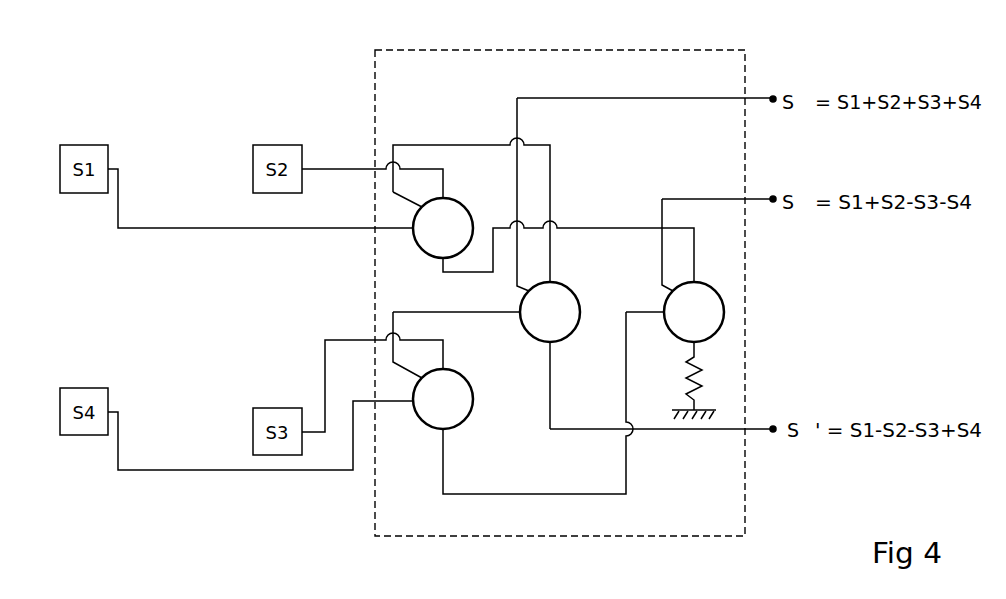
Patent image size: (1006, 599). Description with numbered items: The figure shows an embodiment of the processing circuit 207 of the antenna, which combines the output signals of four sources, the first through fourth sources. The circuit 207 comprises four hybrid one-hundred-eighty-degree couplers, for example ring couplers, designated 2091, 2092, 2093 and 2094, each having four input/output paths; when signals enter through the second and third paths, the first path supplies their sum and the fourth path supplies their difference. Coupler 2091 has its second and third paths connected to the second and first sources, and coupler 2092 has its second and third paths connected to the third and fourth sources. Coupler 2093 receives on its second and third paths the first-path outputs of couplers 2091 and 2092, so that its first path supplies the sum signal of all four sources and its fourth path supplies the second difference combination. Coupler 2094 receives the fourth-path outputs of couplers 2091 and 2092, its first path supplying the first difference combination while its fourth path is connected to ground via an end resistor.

The processing circuit 207 is at (582, 50).
The hybrid 180-degree coupler 2091 is at (471, 218).
The hybrid 180-degree coupler 2092 is at (473, 405).
The hybrid 180-degree coupler 2093 is at (537, 341).
The hybrid 180-degree coupler 2094 is at (721, 296).